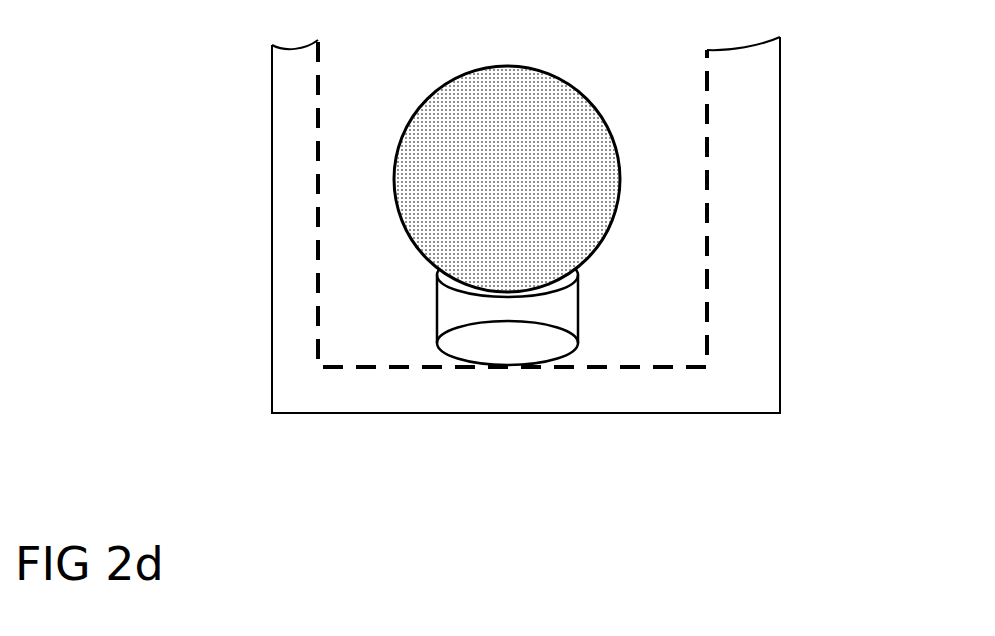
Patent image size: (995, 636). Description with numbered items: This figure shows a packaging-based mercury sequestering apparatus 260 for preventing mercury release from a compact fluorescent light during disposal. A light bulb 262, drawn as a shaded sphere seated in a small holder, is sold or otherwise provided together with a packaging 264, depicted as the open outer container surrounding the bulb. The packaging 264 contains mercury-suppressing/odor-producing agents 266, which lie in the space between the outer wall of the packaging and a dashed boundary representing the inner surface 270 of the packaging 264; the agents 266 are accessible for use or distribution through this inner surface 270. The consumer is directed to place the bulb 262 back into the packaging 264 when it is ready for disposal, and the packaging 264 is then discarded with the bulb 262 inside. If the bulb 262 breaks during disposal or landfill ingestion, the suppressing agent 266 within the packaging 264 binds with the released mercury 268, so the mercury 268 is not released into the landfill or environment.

The packaging-based mercury sequestering apparatus 260 is at (475, 252).
The light bulb 262 is at (529, 169).
The packaging 264 is at (296, 414).
The mercury-suppressing/odor-producing agents 266 is at (742, 143).
The mercury 268 is at (483, 105).
The inner surface 270 is at (706, 62).